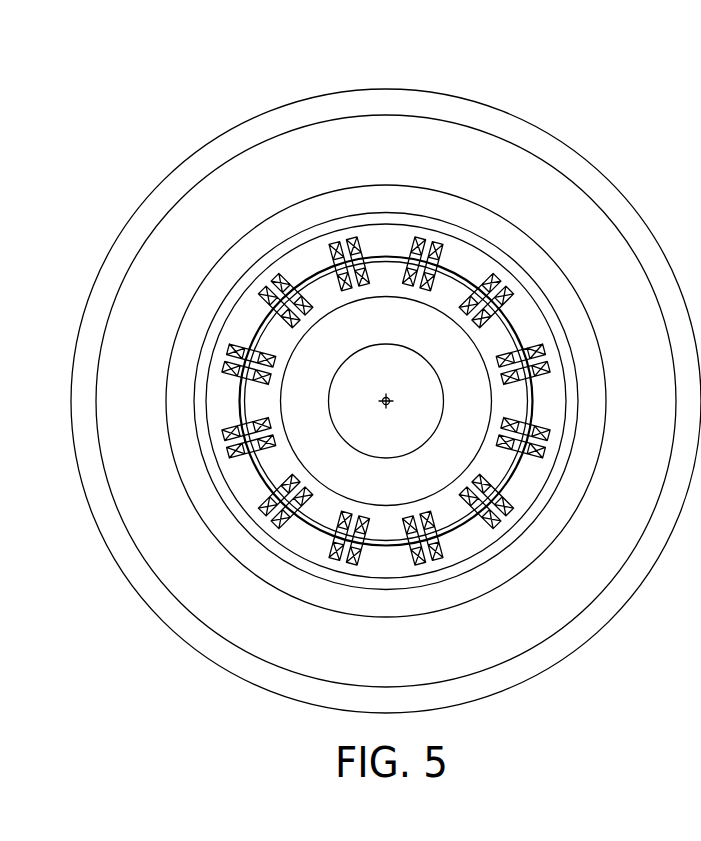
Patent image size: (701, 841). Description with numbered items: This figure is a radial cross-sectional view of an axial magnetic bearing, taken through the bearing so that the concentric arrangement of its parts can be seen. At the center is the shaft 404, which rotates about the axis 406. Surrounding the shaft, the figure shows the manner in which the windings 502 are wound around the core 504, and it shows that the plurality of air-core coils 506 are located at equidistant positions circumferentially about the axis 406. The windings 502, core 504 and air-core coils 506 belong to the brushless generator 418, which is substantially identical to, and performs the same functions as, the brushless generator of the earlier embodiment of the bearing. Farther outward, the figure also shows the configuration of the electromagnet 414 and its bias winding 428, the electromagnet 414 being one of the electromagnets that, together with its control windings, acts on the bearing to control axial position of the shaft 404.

The shaft 404 is at (348, 360).
The axis 406 is at (383, 400).
The electromagnet 414 is at (372, 198).
The brushless generator 418 is at (475, 250).
The bias winding 428 is at (445, 147).
The windings 502 is at (535, 292).
The core 504 is at (533, 328).
The air-core coils 506 is at (520, 358).